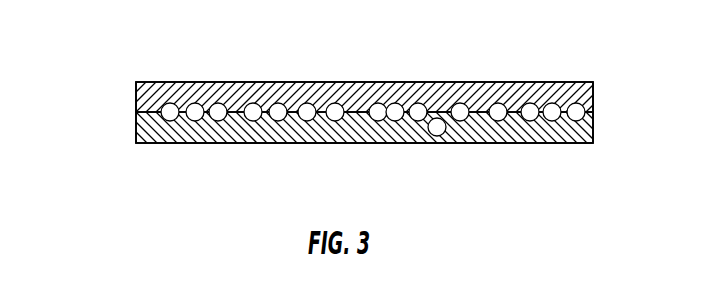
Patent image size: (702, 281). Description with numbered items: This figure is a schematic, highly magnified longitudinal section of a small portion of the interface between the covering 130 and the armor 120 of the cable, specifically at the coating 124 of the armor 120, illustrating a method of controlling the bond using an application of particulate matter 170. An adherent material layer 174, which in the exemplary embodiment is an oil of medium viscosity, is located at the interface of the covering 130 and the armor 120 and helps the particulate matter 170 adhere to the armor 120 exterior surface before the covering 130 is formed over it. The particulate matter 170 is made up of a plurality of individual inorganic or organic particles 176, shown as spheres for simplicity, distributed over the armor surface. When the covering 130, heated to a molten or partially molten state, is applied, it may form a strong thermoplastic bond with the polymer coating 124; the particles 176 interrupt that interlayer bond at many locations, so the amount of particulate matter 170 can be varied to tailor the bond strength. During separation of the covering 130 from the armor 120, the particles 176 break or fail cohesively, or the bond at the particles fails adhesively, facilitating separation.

The armor 120 is at (425, 142).
The coating 124 is at (535, 133).
The covering 130 is at (355, 87).
The particulate matter 170 is at (134, 118).
The adherent material layer 174 is at (152, 110).
The individual particles 176 is at (377, 113).